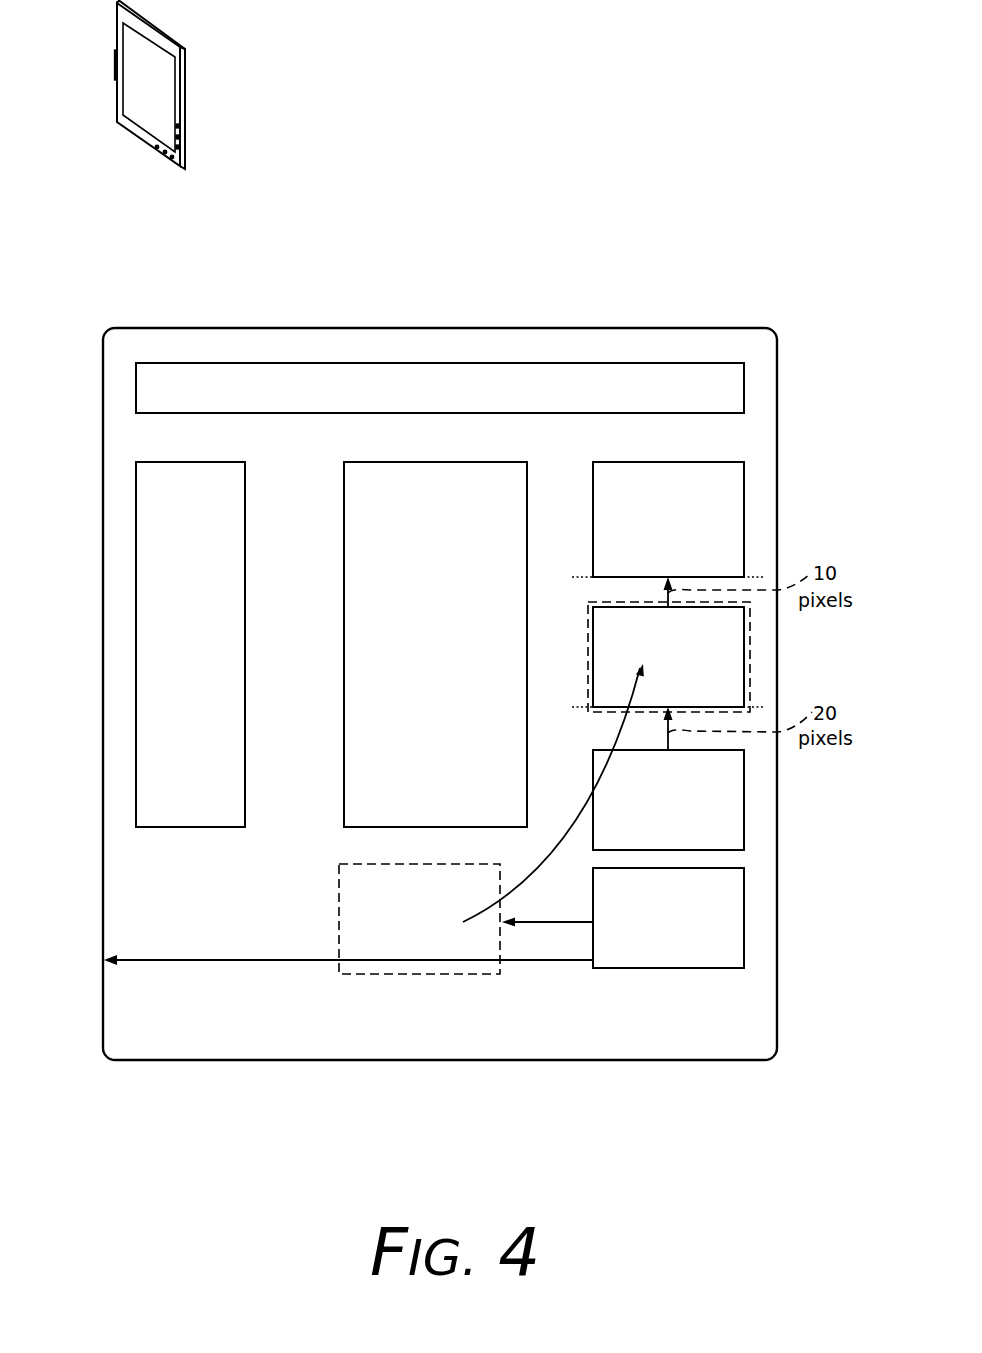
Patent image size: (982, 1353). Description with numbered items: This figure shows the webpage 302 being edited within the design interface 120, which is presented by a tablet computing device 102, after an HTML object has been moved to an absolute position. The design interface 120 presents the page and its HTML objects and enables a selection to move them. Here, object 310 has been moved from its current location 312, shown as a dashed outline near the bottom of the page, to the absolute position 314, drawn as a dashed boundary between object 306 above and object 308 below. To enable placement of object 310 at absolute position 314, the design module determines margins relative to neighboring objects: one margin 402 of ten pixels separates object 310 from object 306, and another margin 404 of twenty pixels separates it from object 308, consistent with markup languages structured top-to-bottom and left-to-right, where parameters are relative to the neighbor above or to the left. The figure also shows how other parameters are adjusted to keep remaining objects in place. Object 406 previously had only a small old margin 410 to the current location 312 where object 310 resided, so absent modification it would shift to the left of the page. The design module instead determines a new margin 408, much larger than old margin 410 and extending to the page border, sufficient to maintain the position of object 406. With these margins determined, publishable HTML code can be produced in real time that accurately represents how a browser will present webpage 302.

The computing device 102 is at (383, 328).
The design interface 120 is at (727, 328).
The webpage 302 is at (150, 1044).
The object 306 is at (650, 532).
The object 308 is at (650, 812).
The object 310 is at (650, 670).
The current location 312 is at (461, 980).
The absolute position 314 is at (760, 660).
The margin 402 is at (672, 592).
The margin 404 is at (668, 748).
The object 406 is at (650, 930).
The new margin 408 is at (260, 962).
The old margin 410 is at (543, 925).